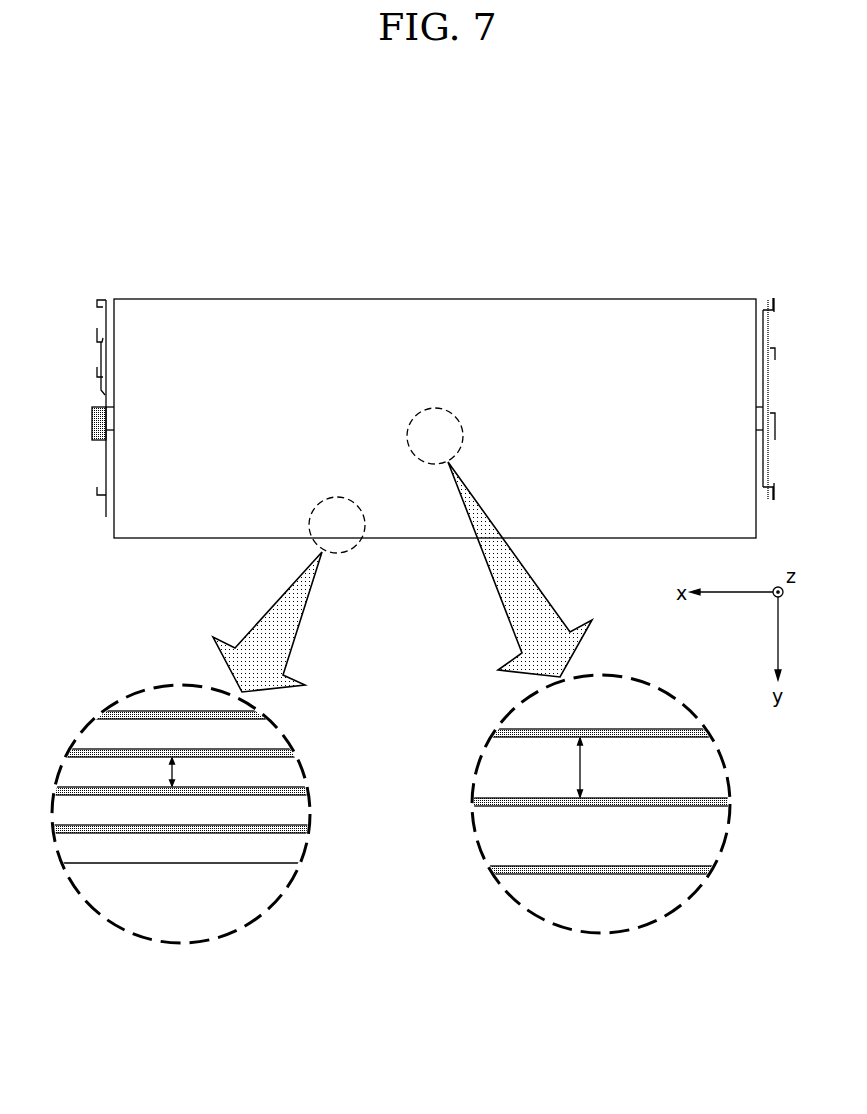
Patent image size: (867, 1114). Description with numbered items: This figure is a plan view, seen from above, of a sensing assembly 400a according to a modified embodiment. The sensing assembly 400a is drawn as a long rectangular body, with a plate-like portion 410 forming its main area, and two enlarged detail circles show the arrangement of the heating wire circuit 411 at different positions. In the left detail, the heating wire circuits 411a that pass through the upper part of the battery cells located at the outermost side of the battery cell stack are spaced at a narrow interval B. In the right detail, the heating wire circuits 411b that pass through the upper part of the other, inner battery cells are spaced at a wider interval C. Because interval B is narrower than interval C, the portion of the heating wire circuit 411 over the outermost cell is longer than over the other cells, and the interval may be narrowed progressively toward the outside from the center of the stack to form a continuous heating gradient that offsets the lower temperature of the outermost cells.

The sensing assembly 400a is at (450, 240).
The plate / case 410 is at (283, 313).
The heating wire circuit 411 is at (453, 893).
The heating wire circuits 411a is at (280, 830).
The heating wire circuits 411b is at (495, 804).